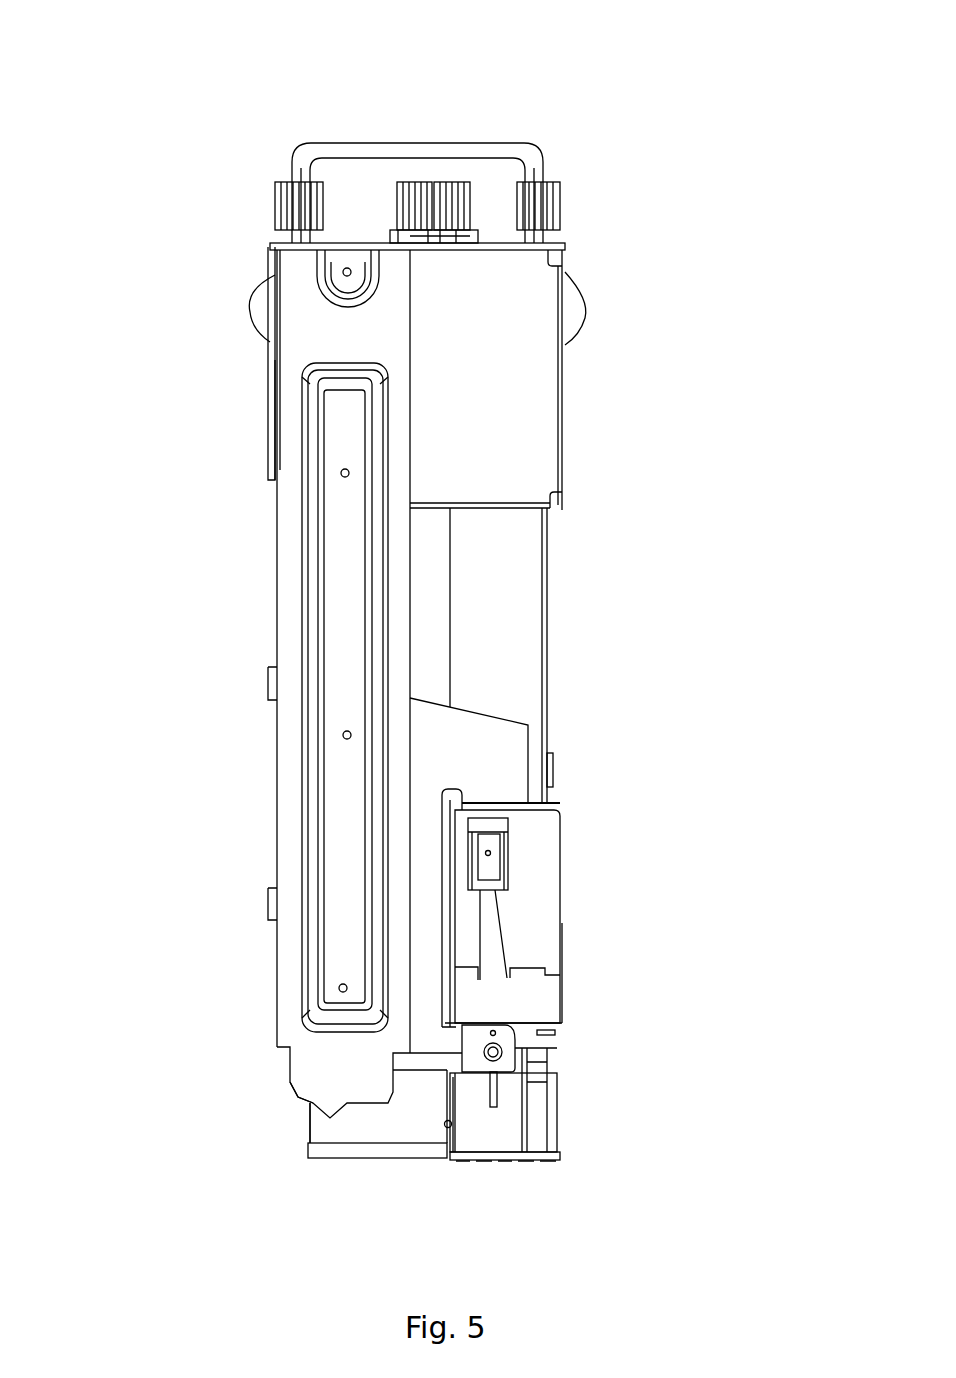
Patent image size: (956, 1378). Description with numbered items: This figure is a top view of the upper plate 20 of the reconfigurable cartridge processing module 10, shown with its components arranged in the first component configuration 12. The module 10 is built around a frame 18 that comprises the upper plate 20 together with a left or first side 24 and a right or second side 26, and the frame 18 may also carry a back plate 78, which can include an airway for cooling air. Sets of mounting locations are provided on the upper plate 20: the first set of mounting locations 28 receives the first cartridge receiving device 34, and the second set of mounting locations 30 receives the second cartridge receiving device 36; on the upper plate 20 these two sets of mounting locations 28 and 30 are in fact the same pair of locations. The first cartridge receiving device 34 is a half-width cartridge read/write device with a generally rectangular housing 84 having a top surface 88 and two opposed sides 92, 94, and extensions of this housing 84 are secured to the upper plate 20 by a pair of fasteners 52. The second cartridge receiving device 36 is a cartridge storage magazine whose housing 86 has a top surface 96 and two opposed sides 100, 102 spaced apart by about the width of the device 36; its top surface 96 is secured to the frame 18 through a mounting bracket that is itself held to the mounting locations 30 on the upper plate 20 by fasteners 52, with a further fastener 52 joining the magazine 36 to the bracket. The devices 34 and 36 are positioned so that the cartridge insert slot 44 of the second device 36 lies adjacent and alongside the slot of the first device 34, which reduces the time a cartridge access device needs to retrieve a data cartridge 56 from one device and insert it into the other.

The reconfigurable cartridge processing module 10 is at (131, 33).
The first component configuration 12 is at (151, 118).
The frame 18 is at (262, 258).
The upper plate 20 is at (358, 346).
The first side 24 is at (270, 382).
The second side 26 is at (565, 392).
The first set of mounting locations 28 is at (345, 748).
The second set of mounting locations 30 is at (502, 1044).
The first cartridge receiving device 34 is at (402, 1166).
The second cartridge receiving device 36 is at (566, 1093).
The cartridge insert slot 44 is at (535, 1160).
The fasteners 52 is at (348, 738).
The data cartridge 56 is at (506, 1162).
The back plate 78 is at (380, 243).
The housing 84 is at (303, 1132).
The housing 86 is at (569, 827).
The top surface 88 is at (400, 1144).
The side 92 is at (305, 1112).
The side 94 is at (443, 1120).
The top surface 96 is at (550, 918).
The side 100 is at (444, 1123).
The side 102 is at (562, 923).